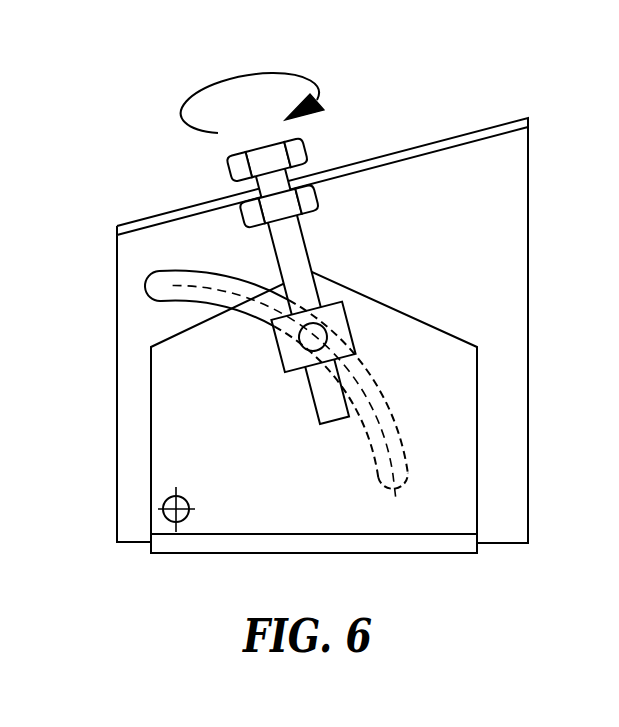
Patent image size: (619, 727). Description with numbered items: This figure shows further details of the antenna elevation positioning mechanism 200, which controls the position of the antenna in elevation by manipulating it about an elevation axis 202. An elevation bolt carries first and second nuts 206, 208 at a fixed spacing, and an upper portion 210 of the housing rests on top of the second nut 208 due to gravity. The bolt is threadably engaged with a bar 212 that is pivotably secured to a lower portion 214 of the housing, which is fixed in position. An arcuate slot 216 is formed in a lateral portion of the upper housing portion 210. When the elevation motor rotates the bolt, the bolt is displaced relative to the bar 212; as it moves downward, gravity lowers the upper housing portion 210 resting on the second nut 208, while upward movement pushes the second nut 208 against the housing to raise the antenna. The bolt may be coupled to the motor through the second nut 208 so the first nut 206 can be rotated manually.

The antenna elevation positioning mechanism 200 is at (319, 290).
The elevation axis 202 is at (169, 497).
The first nut 206 is at (240, 167).
The second nut 208 is at (310, 199).
The upper portion of the housing 210 is at (517, 155).
The bar 212 is at (338, 320).
The lower portion of the housing 214 is at (329, 525).
The arcuate slot 216 is at (205, 271).